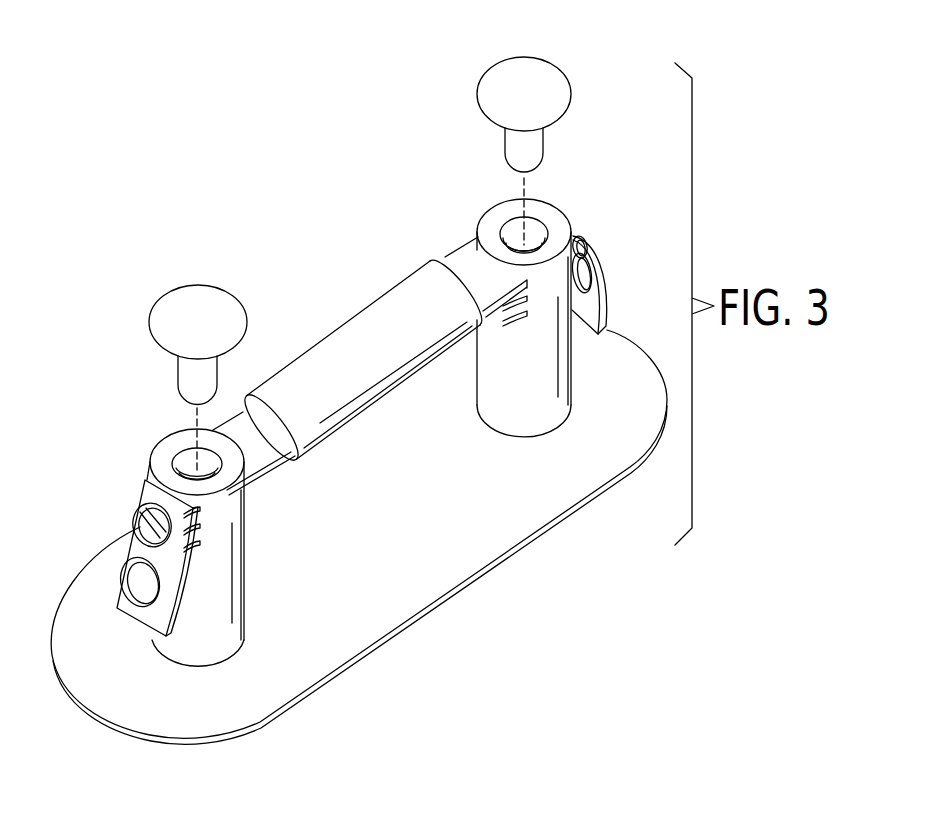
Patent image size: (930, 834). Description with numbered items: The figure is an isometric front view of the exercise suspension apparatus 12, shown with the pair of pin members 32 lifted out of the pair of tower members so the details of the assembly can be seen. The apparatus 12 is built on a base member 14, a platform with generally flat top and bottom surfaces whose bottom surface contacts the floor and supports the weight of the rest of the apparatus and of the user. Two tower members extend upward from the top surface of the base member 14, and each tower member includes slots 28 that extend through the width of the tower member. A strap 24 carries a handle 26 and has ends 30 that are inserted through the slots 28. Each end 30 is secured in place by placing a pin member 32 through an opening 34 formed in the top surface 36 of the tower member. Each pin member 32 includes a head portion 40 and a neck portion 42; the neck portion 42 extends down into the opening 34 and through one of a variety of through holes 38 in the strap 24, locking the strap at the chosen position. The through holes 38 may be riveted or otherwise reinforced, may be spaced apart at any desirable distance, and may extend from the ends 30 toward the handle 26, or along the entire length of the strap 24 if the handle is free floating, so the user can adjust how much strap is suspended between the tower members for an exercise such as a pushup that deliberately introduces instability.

The exercise suspension apparatus 12 is at (116, 257).
The base member 14 is at (396, 525).
The strap 24 is at (450, 248).
The handle 26 is at (347, 365).
The slots 28 is at (209, 533).
The ends 30 is at (131, 628).
The pin member 32 is at (151, 294).
The opening 34 is at (180, 458).
The top surface 36 is at (175, 441).
The through holes 38 is at (126, 560).
The head portion 40 is at (186, 332).
The neck portion 42 is at (185, 393).